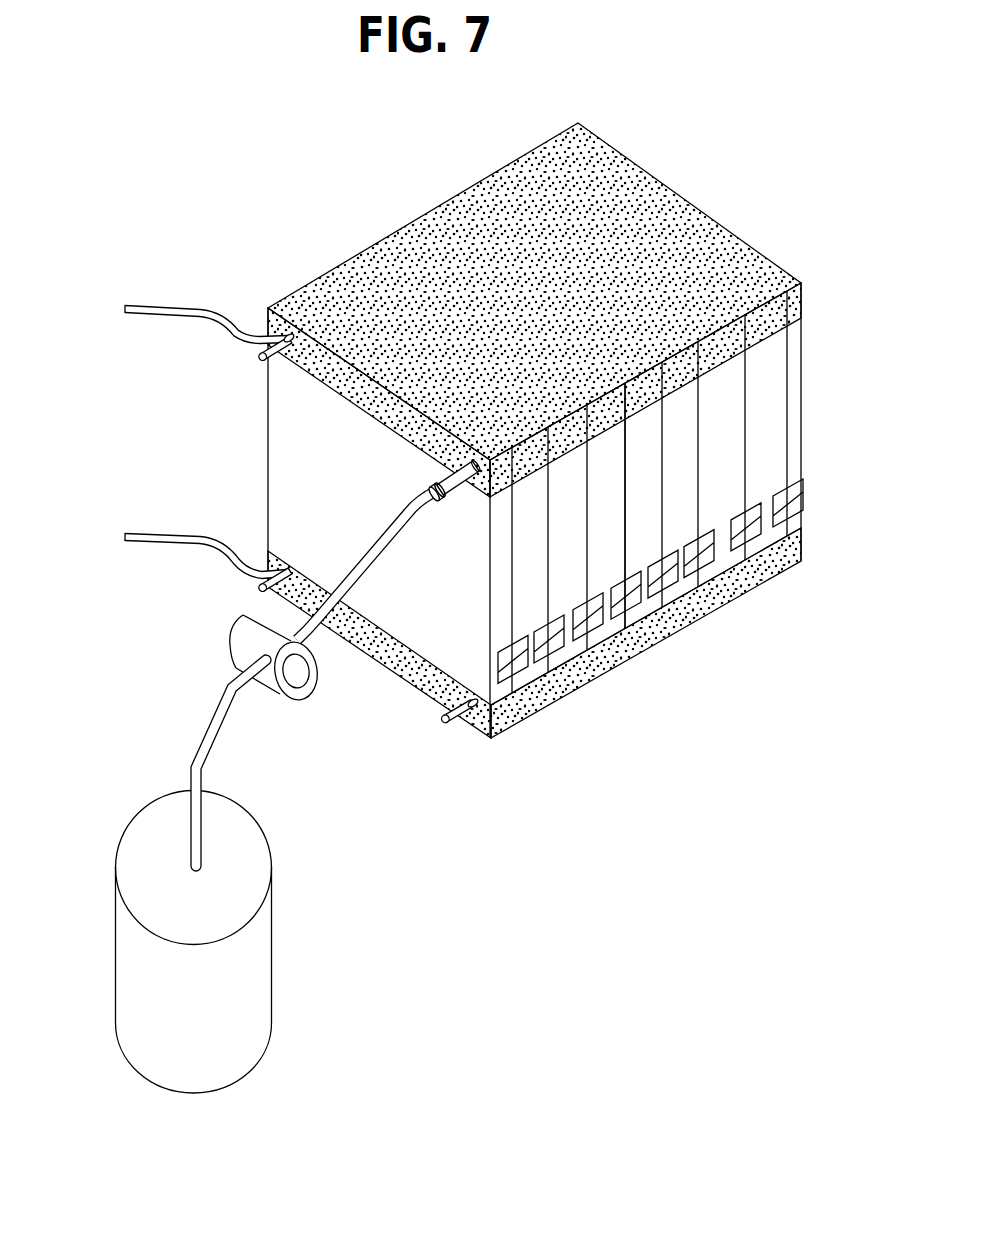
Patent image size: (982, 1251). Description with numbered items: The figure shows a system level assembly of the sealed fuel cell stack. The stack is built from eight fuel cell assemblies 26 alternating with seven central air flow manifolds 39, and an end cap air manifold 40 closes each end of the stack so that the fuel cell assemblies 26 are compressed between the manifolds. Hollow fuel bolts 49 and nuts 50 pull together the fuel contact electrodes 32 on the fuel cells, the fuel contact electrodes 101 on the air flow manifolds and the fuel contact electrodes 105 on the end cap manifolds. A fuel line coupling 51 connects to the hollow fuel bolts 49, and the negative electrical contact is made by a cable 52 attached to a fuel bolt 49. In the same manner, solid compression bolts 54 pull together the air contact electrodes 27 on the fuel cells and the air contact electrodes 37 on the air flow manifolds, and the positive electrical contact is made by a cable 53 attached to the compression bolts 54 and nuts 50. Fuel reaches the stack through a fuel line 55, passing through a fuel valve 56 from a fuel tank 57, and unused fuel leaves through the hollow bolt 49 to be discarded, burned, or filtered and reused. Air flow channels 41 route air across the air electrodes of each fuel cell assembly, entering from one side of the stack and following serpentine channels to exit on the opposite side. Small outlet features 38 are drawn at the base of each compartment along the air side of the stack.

The fuel contact electrode 32 is at (490, 176).
The fuel contact electrode 105 is at (803, 300).
The fuel cell assembly 26 is at (745, 430).
The end cap air manifold 40 is at (802, 465).
The air flow channel 41 is at (782, 499).
The fuel contact electrode 101 is at (636, 405).
The outlet boxes 38 is at (664, 598).
The central air flow manifold 39 is at (567, 652).
The air contact electrode 27 is at (508, 728).
The air contact electrode 37 is at (372, 652).
The nut 50 is at (268, 322).
The hollow fuel bolt 49 is at (256, 362).
The solid compression bolt 54 is at (259, 590).
The cable 52 is at (125, 310).
The cable 53 is at (125, 537).
The fuel line coupling 51 is at (435, 478).
The fuel line 55 is at (215, 727).
The fuel valve 56 is at (228, 634).
The fuel tank 57 is at (115, 962).